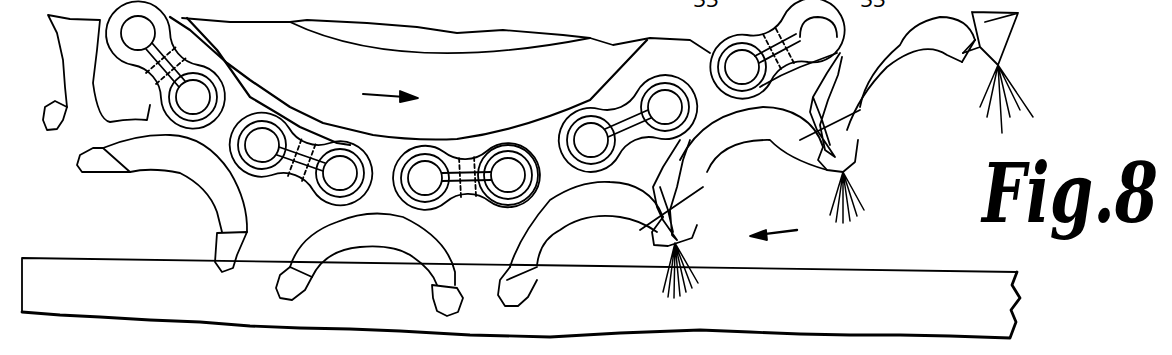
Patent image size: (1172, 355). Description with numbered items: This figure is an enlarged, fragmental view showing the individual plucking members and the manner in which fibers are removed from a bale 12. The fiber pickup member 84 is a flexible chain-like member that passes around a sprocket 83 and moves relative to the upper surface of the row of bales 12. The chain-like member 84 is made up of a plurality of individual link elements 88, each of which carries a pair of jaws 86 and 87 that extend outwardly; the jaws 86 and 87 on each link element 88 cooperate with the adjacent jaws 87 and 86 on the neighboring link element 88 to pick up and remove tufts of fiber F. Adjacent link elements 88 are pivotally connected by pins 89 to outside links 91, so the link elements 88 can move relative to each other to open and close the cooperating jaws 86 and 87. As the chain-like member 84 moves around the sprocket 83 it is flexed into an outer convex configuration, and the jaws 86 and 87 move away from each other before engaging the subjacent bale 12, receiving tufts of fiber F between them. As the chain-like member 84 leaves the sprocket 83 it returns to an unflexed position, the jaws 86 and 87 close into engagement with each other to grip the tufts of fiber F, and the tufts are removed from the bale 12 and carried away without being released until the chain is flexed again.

The bale 12 is at (843, 250).
The sprocket 83 is at (452, 80).
The fiber pickup member 84 is at (716, 167).
The jaw 86 is at (53, 99).
The jaw 87 is at (102, 168).
The link element 88 is at (237, 100).
The pin 89 is at (433, 172).
The outside link 91 is at (503, 147).
The tufts of fiber F is at (690, 256).